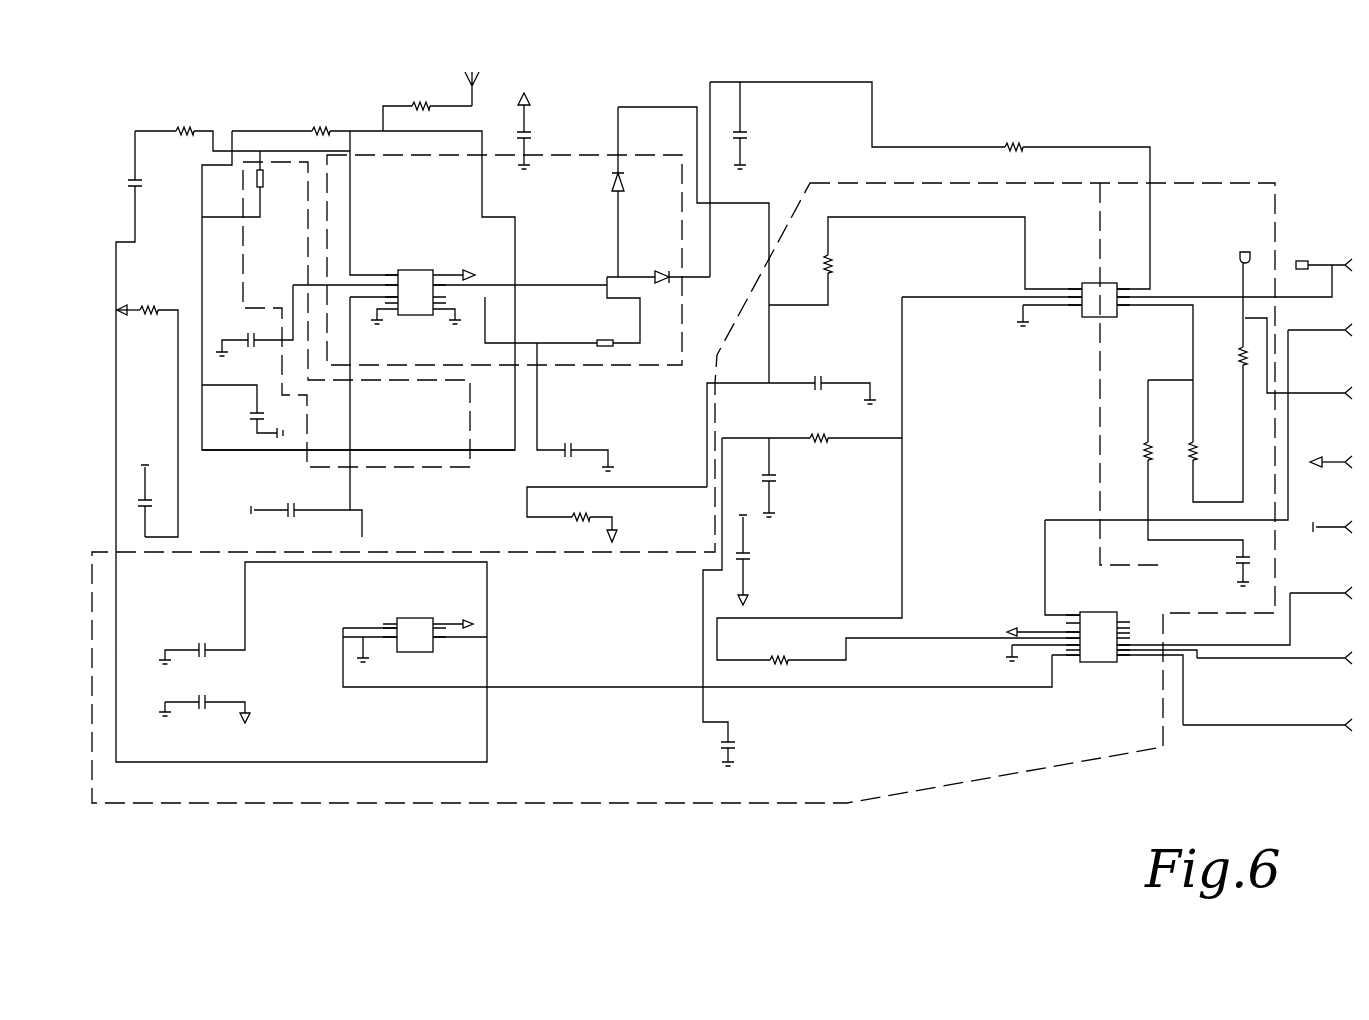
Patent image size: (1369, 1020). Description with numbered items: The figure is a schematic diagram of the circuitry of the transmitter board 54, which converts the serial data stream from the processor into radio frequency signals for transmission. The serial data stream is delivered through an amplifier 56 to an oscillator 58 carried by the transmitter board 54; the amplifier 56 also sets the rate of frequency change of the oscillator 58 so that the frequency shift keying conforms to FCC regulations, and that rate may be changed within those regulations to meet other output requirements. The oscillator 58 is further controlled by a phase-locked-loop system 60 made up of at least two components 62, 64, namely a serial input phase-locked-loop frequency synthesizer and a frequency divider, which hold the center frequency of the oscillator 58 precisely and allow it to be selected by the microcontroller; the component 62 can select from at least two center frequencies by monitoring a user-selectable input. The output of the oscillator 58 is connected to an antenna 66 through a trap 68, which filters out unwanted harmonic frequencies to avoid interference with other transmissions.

The transmitter board 54 is at (1238, 63).
The amplifier 56 is at (1180, 183).
The oscillator 58 is at (550, 155).
The phase-locked-loop system 60 is at (1045, 183).
The component 62 is at (1098, 668).
The component 64 is at (406, 646).
The antenna 66 is at (297, 162).
The trap 68 is at (472, 81).